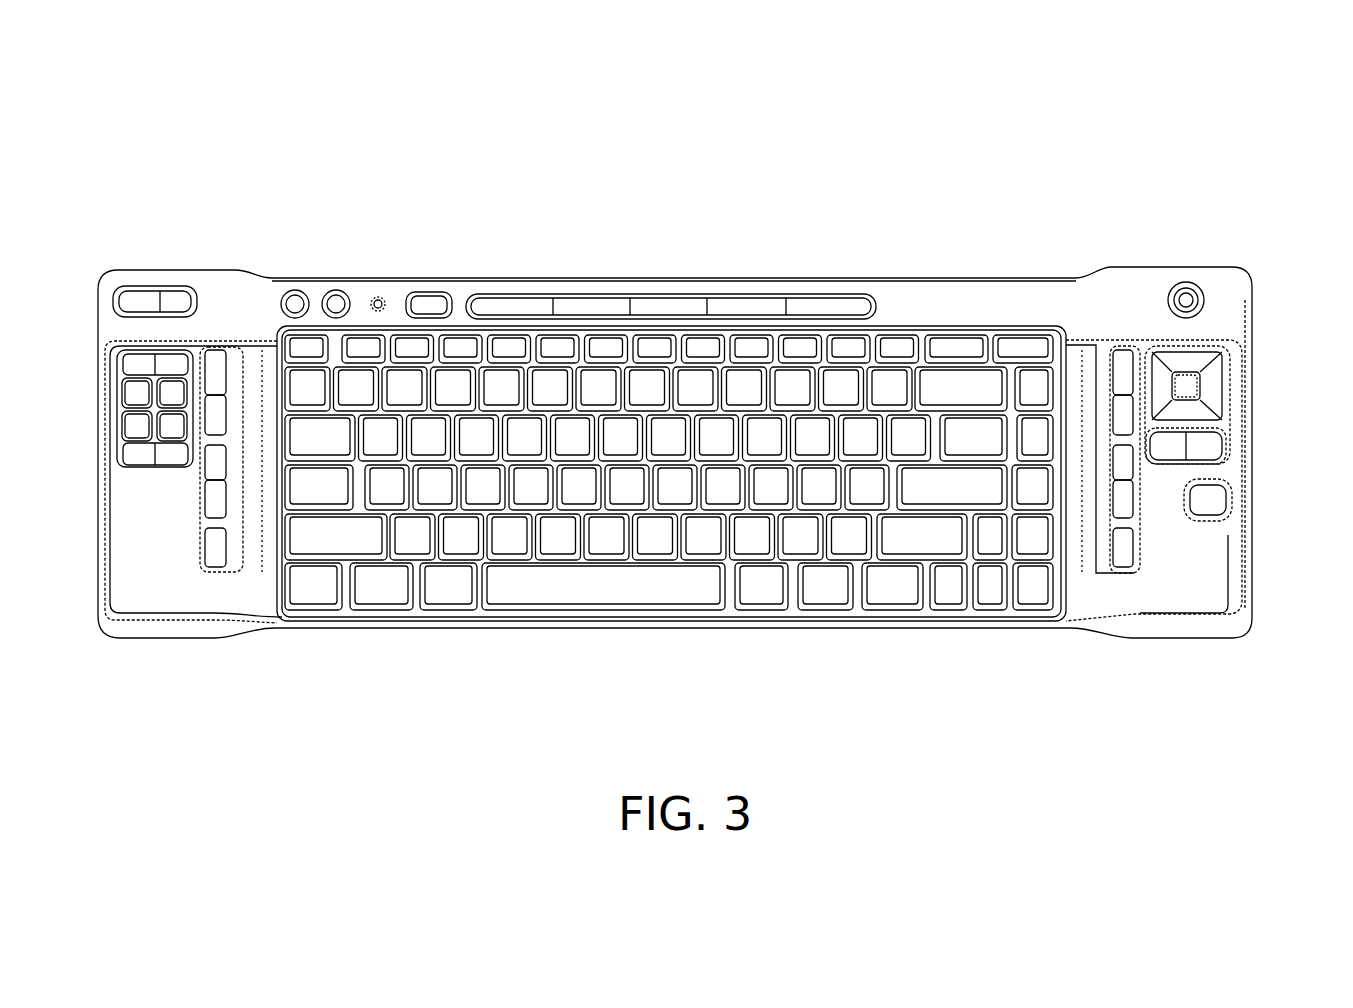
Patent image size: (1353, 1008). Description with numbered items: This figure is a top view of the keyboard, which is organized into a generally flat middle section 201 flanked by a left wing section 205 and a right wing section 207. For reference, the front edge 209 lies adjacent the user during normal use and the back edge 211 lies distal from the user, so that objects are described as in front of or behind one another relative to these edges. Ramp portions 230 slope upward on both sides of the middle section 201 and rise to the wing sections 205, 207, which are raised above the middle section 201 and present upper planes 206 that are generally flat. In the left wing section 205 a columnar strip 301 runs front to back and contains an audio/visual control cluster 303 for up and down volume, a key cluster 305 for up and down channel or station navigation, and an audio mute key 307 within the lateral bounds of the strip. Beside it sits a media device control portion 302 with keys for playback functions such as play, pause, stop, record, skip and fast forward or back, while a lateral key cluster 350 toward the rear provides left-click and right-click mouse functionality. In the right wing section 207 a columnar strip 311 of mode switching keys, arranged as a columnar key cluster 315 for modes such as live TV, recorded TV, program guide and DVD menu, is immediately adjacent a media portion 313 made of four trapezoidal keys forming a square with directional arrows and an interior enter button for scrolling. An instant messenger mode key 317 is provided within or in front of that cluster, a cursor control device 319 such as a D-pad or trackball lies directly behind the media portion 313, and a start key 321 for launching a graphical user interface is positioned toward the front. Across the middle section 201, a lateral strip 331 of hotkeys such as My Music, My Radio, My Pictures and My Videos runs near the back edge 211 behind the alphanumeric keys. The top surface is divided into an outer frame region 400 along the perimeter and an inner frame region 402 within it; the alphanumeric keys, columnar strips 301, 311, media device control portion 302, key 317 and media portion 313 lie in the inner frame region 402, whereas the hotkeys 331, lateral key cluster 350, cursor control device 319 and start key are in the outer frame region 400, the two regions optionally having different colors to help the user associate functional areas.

The middle section 201 is at (688, 267).
The left wing section 205 is at (157, 575).
The upper plane 206 is at (135, 552).
The right wing section 207 is at (1195, 588).
The front edge 209 is at (671, 422).
The back edge 211 is at (583, 277).
The ramp portion 230 is at (263, 575).
The columnar strip 301 is at (218, 350).
The media device control portion 302 is at (142, 457).
The audio/visual control cluster 303 is at (218, 388).
The key cluster 305 is at (218, 503).
The audio mute key 307 is at (218, 560).
The columnar strip 311 is at (1118, 348).
The media portion 313 is at (1205, 388).
The columnar key cluster 315 is at (1108, 447).
The instant messenger mode key 317 is at (1120, 560).
The cursor control device 319 is at (1193, 288).
The start key 321 is at (1205, 503).
The lateral strip of hotkeys 331 is at (745, 295).
The lateral key cluster 350 is at (150, 282).
The outer frame region 400 is at (1227, 328).
The inner frame region 402 is at (458, 418).